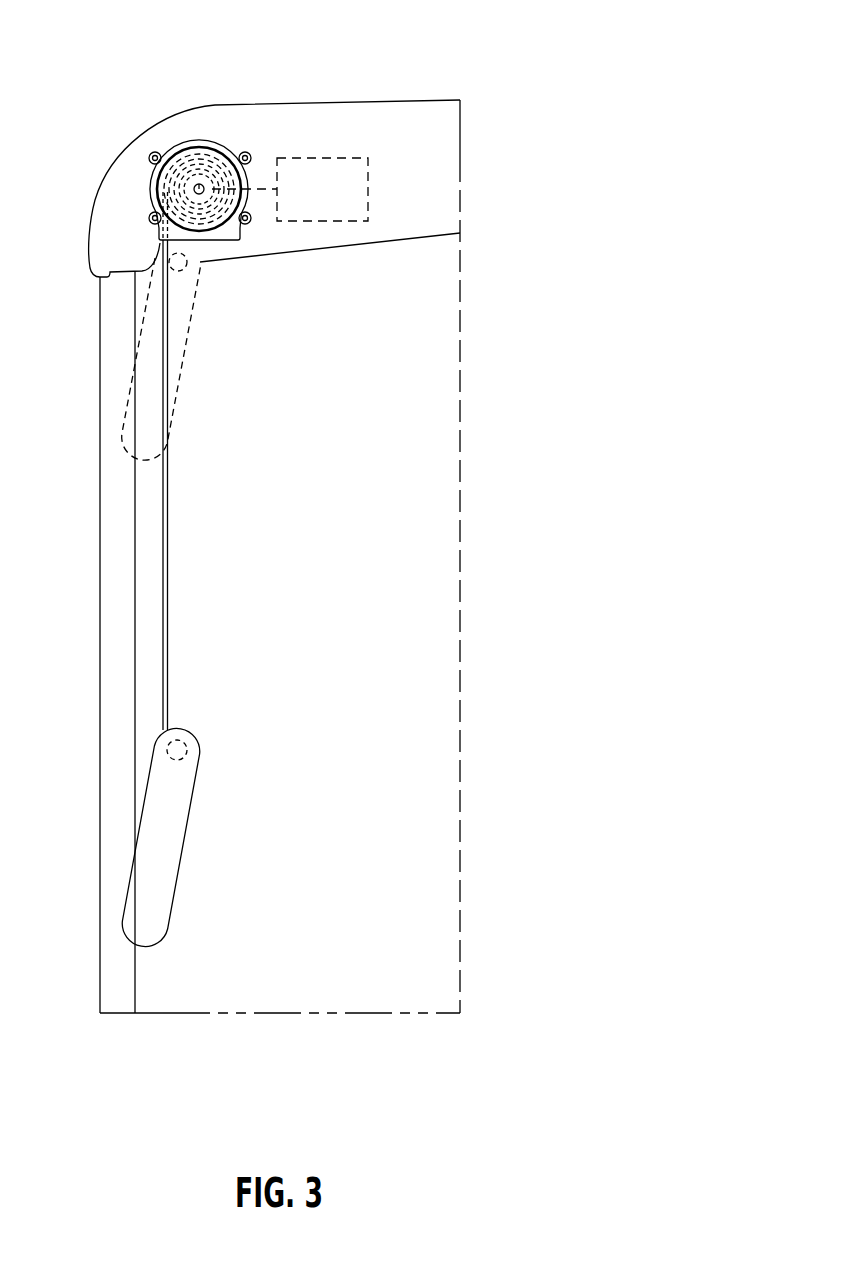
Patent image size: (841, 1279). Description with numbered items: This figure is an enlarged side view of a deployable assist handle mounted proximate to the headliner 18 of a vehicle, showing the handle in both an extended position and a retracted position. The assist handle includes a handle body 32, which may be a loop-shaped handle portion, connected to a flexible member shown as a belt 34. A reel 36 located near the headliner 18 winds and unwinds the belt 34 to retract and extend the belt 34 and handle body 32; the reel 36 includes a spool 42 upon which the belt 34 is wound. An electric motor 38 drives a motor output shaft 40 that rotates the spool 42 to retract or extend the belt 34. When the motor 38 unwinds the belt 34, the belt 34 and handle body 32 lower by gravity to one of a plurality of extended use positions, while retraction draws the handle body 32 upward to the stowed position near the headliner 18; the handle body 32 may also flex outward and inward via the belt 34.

The headliner 18 is at (435, 110).
The handle body 32 is at (162, 803).
The belt 34 is at (163, 557).
The reel 36 is at (234, 131).
The electric motor 38 is at (353, 158).
The motor output shaft 40 is at (199, 183).
The spool 42 is at (185, 187).